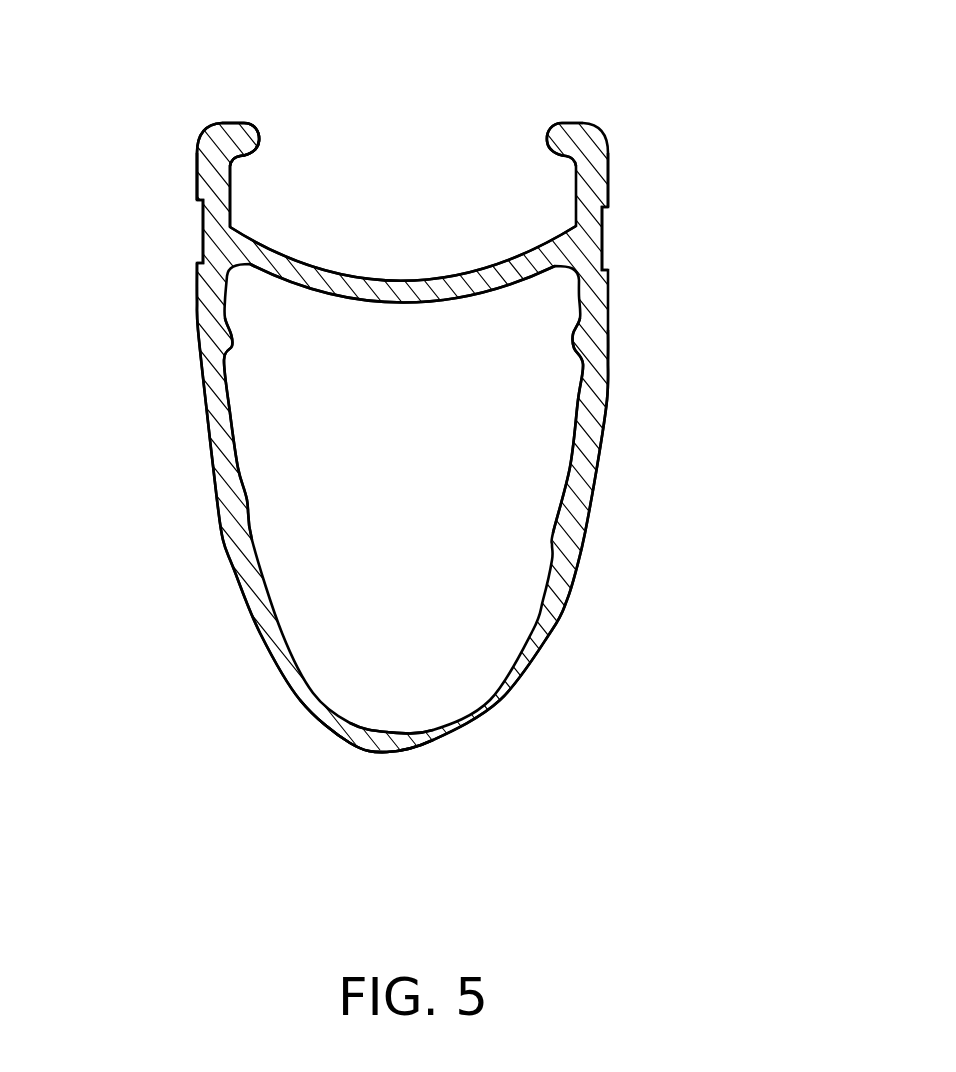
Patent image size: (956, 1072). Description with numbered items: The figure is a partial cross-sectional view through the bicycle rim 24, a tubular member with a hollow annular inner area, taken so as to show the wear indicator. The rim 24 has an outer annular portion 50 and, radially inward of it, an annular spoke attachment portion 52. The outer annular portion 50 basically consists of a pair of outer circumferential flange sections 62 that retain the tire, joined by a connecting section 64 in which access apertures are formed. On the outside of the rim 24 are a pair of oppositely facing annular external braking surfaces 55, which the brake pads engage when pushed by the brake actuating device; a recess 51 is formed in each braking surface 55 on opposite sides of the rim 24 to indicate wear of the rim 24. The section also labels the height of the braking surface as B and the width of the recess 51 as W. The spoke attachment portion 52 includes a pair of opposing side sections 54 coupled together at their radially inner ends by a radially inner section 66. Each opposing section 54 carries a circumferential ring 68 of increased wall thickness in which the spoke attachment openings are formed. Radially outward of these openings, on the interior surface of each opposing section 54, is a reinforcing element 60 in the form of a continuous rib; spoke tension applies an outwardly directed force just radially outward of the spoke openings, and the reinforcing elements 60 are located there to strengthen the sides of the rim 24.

The rim 24 is at (630, 86).
The outer annular portion 50 is at (198, 141).
The recess 51 is at (193, 257).
The annular spoke attachment portion 52 is at (590, 567).
The opposing side section 54 is at (227, 527).
The external braking surface 55 is at (193, 180).
The reinforcing element 60 is at (233, 345).
The outer circumferential flange section 62 is at (218, 170).
The connecting section 64 is at (393, 280).
The radially inner section 66 is at (423, 752).
The circumferential ring 68 is at (238, 468).
The width of recess W is at (610, 207).
The brake track height B is at (608, 147).